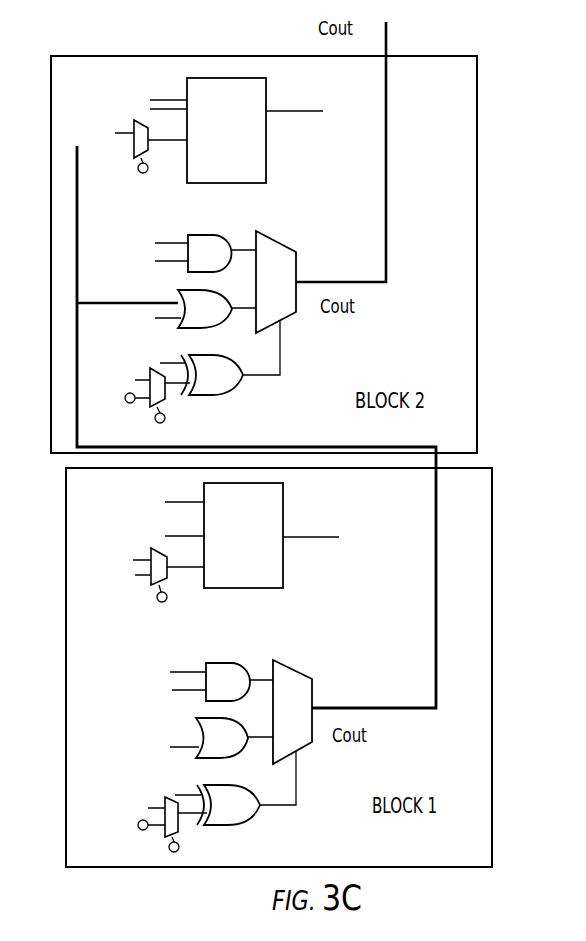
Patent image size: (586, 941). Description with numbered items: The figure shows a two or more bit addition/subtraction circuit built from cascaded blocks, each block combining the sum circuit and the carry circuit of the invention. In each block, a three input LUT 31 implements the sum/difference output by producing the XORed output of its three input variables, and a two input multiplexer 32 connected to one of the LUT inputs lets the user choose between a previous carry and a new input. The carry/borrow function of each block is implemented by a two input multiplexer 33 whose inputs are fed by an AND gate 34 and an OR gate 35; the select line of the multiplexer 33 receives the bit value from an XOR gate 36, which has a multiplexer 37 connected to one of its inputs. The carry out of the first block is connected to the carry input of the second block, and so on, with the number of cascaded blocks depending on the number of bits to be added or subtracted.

The three input LUT 31 is at (236, 130).
The two input multiplexer 32 is at (137, 153).
The two input multiplexer 33 is at (284, 497).
The AND gate 34 is at (209, 460).
The OR gate 35 is at (209, 518).
The XOR gate 36 is at (216, 572).
The multiplexer 37 is at (152, 405).